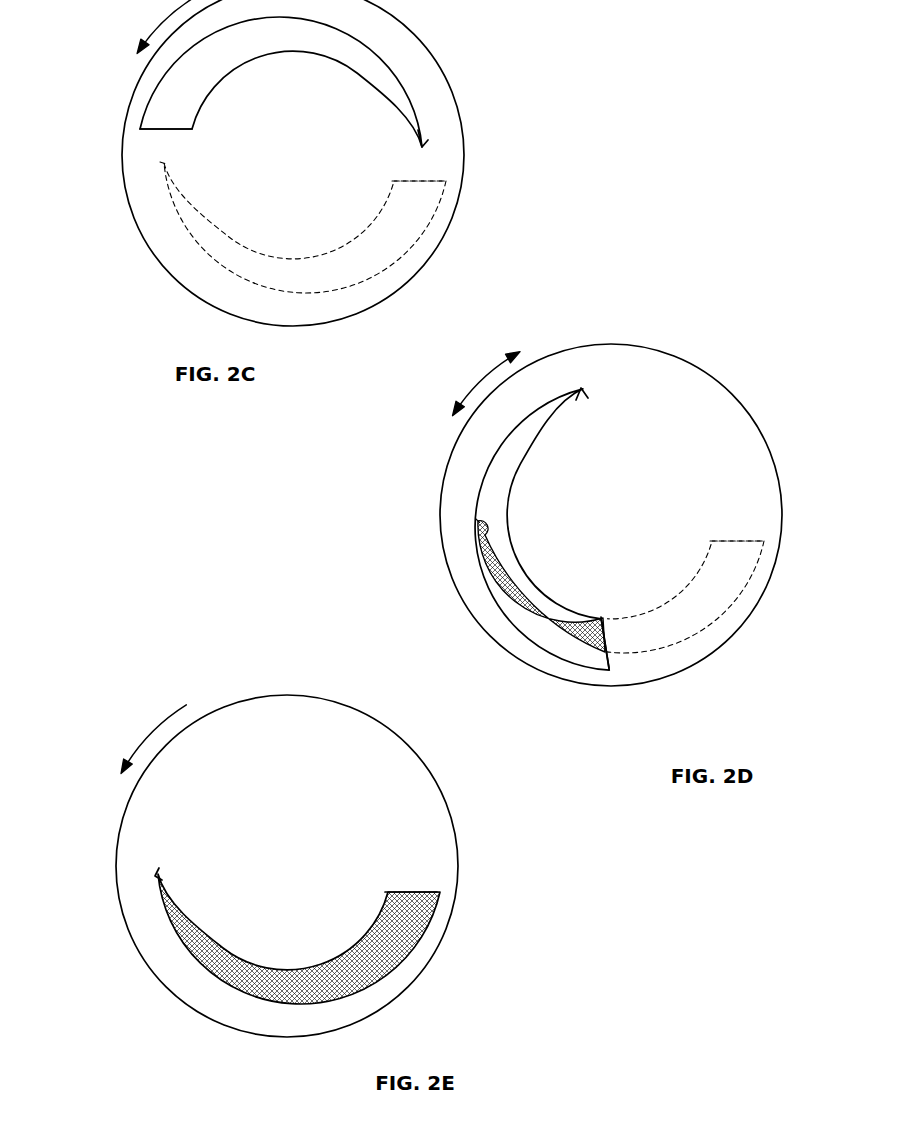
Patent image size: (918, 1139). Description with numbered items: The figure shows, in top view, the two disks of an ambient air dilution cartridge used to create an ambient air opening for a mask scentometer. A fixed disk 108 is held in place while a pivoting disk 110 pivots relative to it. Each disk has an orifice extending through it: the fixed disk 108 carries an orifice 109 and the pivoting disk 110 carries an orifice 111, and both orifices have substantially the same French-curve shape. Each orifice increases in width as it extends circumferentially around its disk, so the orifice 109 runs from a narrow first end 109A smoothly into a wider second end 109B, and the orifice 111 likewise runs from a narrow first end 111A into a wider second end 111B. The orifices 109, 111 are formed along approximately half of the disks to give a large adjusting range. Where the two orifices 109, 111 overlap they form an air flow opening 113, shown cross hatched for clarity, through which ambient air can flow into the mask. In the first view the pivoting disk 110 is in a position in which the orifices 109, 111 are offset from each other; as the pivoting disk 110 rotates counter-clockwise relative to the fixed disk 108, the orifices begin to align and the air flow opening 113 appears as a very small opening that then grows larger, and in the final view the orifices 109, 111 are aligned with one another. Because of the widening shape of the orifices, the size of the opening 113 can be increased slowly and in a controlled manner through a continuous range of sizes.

In FIG. 2C, the fixed disk 108 is at (420, 162).
In FIG. 2D, the fixed disk 108 is at (725, 477).
In FIG. 2E, the fixed disk 108 is at (407, 835).
In FIG. 2C, the orifice 109 is at (340, 292).
In FIG. 2D, the orifice 109 is at (682, 642).
In FIG. 2E, the orifice 109 is at (393, 975).
In FIG. 2C, the first end 109A is at (163, 163).
In FIG. 2D, the first end 109A is at (478, 522).
In FIG. 2E, the first end 109A is at (147, 877).
In FIG. 2C, the second end 109B is at (443, 183).
In FIG. 2D, the second end 109B is at (770, 546).
In FIG. 2E, the second end 109B is at (437, 890).
In FIG. 2C, the pivoting disk 110 is at (435, 82).
In FIG. 2D, the pivoting disk 110 is at (687, 382).
In FIG. 2E, the pivoting disk 110 is at (380, 740).
In FIG. 2C, the orifice 111 is at (393, 64).
In FIG. 2D, the orifice 111 is at (483, 463).
In FIG. 2E, the orifice 111 is at (299, 980).
In FIG. 2C, the first end 111A is at (427, 143).
In FIG. 2D, the first end 111A is at (583, 388).
In FIG. 2E, the first end 111A is at (153, 873).
In FIG. 2C, the second end 111B is at (140, 128).
In FIG. 2D, the second end 111B is at (608, 668).
In FIG. 2E, the second end 111B is at (437, 893).
In FIG. 2D, the air flow opening 113 is at (548, 630).
In FIG. 2E, the air flow opening 113 is at (220, 977).